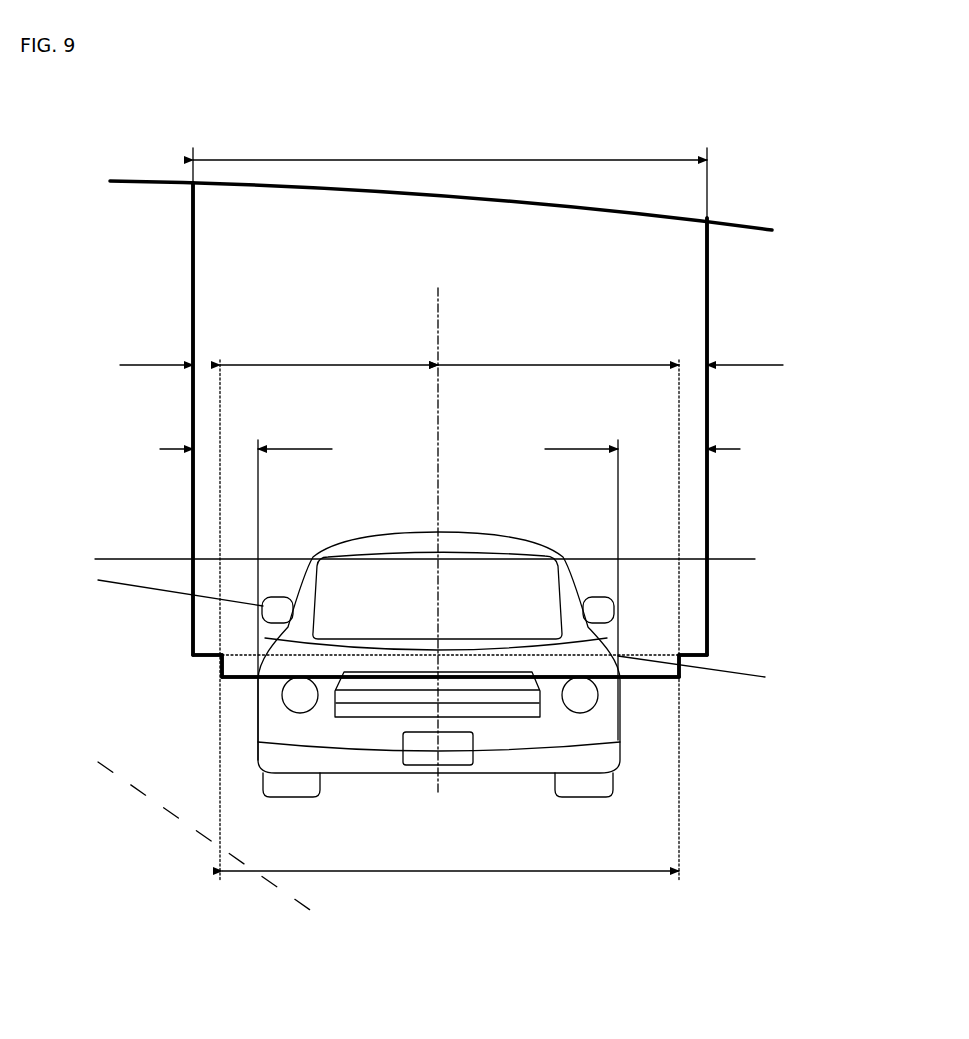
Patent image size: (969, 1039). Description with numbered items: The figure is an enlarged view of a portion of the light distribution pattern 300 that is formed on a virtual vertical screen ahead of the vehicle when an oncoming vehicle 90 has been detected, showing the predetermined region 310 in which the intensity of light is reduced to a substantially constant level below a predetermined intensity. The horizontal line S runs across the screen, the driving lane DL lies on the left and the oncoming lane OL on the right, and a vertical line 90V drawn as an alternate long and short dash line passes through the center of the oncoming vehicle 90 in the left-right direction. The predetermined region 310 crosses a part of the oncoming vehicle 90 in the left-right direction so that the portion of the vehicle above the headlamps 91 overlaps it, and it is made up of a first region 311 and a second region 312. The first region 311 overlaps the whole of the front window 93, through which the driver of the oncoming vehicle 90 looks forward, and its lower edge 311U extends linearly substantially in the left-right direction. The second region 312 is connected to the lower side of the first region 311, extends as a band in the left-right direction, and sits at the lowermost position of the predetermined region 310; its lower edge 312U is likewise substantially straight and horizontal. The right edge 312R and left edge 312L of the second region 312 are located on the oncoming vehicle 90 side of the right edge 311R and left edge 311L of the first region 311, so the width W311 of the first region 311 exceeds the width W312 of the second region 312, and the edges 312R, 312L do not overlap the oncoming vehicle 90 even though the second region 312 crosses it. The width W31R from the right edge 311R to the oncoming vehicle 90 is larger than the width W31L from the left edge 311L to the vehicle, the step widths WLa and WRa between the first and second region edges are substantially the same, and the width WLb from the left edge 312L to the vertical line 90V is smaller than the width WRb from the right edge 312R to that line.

The light distribution pattern 300 is at (152, 152).
The predetermined region 310 is at (186, 276).
The first region 311 is at (693, 600).
The left edge of the first region 311L is at (190, 627).
The right edge of the first region 311R is at (712, 637).
The lower edge of the first region 311U is at (197, 667).
The second region 312 is at (680, 660).
The left edge of the second region 312L is at (217, 665).
The right edge of the second region 312R is at (683, 672).
The lower edge of the second region 312U is at (370, 678).
The oncoming vehicle 90 is at (392, 525).
The vertical line 90V is at (437, 313).
The headlamps 91 is at (305, 697).
The front window 93 is at (452, 577).
The horizontal line S is at (437, 560).
The width of the first region W311 is at (450, 145).
The width of the second region W312 is at (450, 886).
The width from the left edge of the first region to the left edge of the second regi WLa is at (156, 352).
The width from the left edge of the second region to the vertical line WLb is at (329, 352).
The width from the right edge of the first region to the right edge of the second re WRa is at (745, 352).
The width from the right edge of the second region to the vertical line WRb is at (558, 352).
The width from the left edge of the first region to the oncoming vehicle W31L is at (246, 591).
The width from the right edge of the first region to the oncoming vehicle W31R is at (642, 581).
The driving lane DL is at (168, 862).
The oncoming lane OL is at (688, 812).